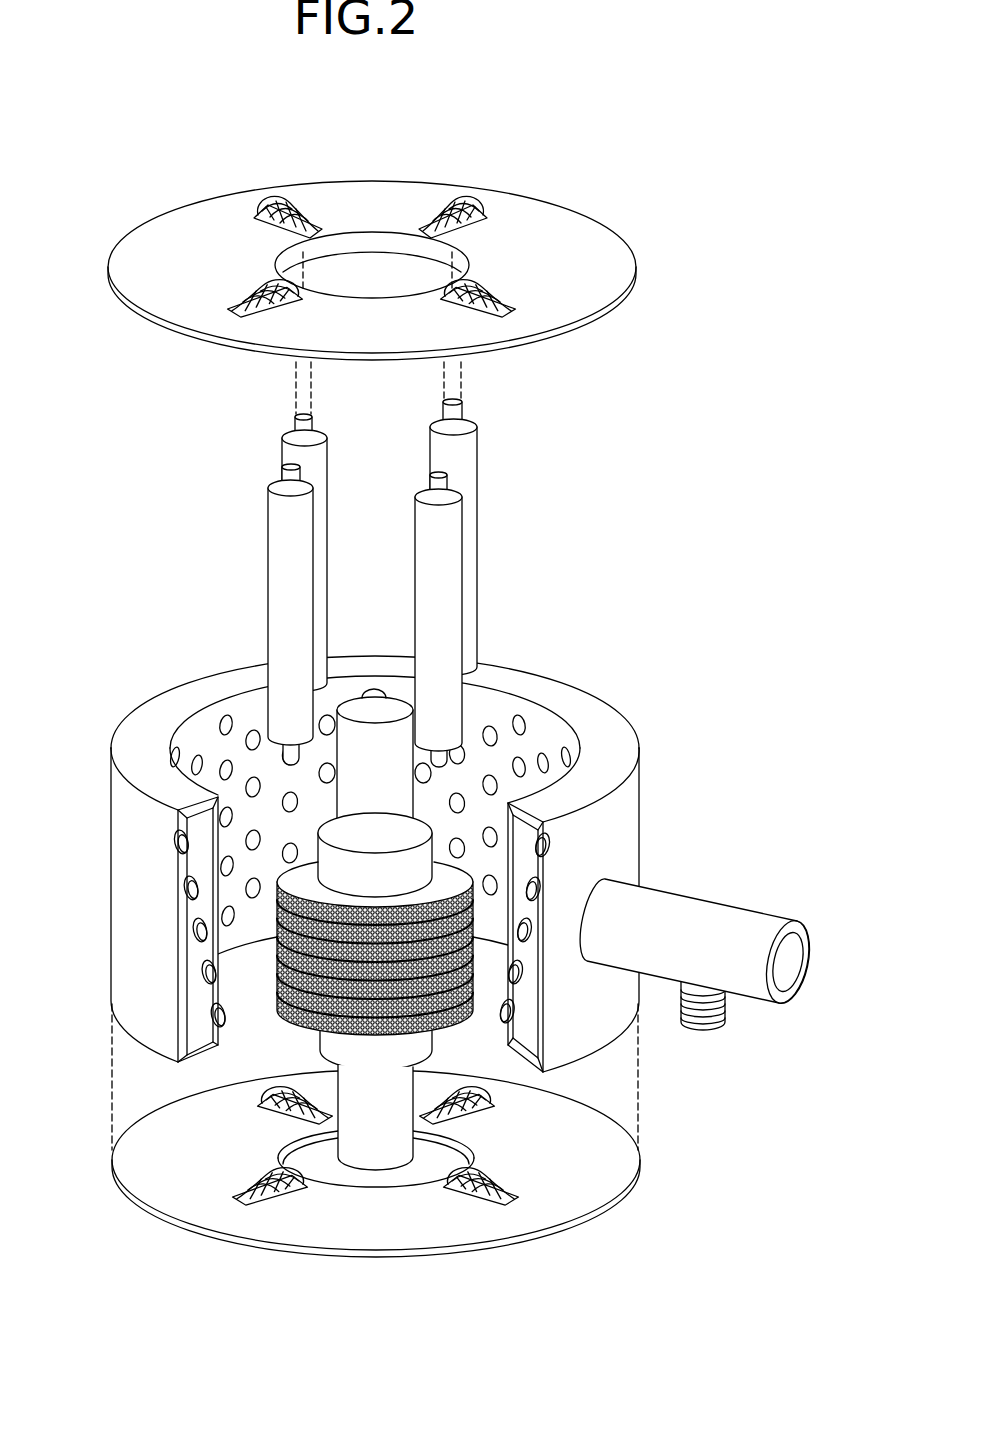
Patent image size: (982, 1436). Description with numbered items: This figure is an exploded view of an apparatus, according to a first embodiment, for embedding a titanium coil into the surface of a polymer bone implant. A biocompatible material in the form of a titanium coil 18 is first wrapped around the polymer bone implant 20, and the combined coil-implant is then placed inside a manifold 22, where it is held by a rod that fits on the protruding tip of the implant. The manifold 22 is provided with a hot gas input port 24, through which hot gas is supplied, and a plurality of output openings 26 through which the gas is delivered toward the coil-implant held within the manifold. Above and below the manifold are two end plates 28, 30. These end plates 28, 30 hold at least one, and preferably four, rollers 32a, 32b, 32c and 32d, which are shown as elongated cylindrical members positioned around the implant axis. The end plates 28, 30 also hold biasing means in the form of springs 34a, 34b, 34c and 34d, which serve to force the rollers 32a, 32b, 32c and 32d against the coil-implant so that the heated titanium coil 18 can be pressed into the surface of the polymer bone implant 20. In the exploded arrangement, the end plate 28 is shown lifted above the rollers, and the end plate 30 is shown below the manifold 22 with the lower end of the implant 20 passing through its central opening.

The titanium coil 18 is at (274, 1000).
The polymer bone implant 20 is at (405, 1052).
The manifold 22 is at (602, 743).
The hot gas input port 24 is at (792, 968).
The output openings 26 is at (217, 727).
The end plate 28 is at (597, 262).
The end plate 30 is at (567, 1193).
The roller 32a is at (290, 557).
The roller 32b is at (307, 460).
The roller 32c is at (462, 468).
The roller 32d is at (438, 613).
The spring 34a is at (233, 1177).
The spring 34b is at (273, 1110).
The spring 34c is at (490, 1098).
The spring 34d is at (513, 1197).